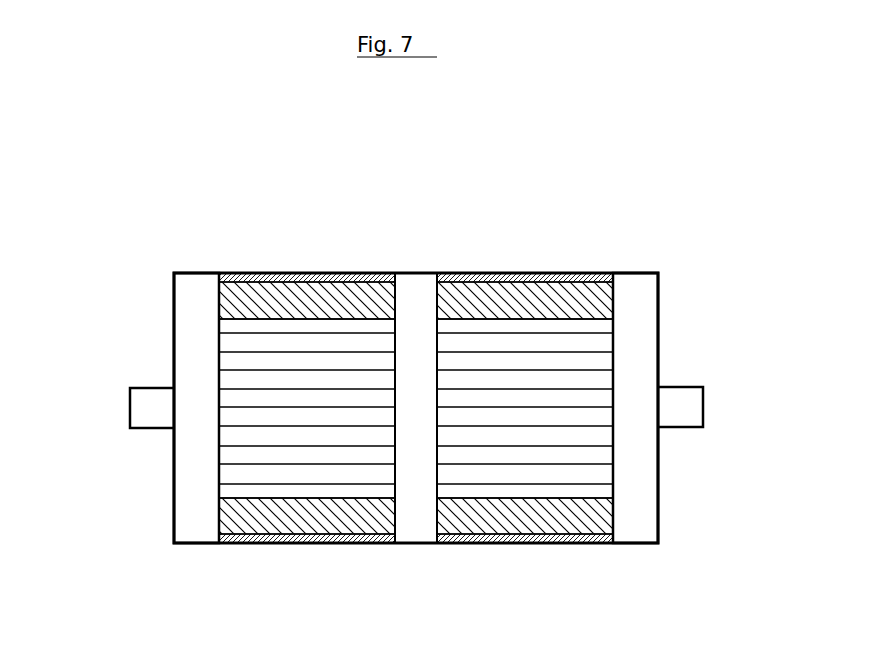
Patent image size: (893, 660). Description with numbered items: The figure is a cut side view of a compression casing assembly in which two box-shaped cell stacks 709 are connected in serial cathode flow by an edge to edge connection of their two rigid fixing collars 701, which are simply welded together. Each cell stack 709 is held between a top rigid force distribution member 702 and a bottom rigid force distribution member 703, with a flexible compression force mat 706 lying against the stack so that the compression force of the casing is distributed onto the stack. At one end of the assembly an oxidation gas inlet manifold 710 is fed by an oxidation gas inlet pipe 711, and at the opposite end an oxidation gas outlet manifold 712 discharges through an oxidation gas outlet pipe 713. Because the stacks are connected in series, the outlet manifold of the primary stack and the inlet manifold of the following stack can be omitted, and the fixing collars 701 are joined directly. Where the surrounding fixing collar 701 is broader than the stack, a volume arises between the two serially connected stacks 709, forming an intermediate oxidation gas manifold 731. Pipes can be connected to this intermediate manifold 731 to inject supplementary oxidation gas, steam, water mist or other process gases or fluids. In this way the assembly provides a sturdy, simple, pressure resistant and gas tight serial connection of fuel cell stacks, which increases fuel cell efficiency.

The rigid fixing collar 701 is at (432, 272).
The top rigid force distribution member 702 is at (233, 280).
The bottom rigid force distribution member 703 is at (331, 512).
The flexible compression force mat 706 is at (295, 537).
The cell stack 709 is at (301, 360).
The oxidation gas inlet manifold 710 is at (193, 363).
The oxidation gas inlet pipe 711 is at (130, 390).
The oxidation gas outlet manifold 712 is at (643, 408).
The oxidation gas outlet pipe 713 is at (691, 387).
The intermediate oxidation gas manifold 731 is at (412, 405).